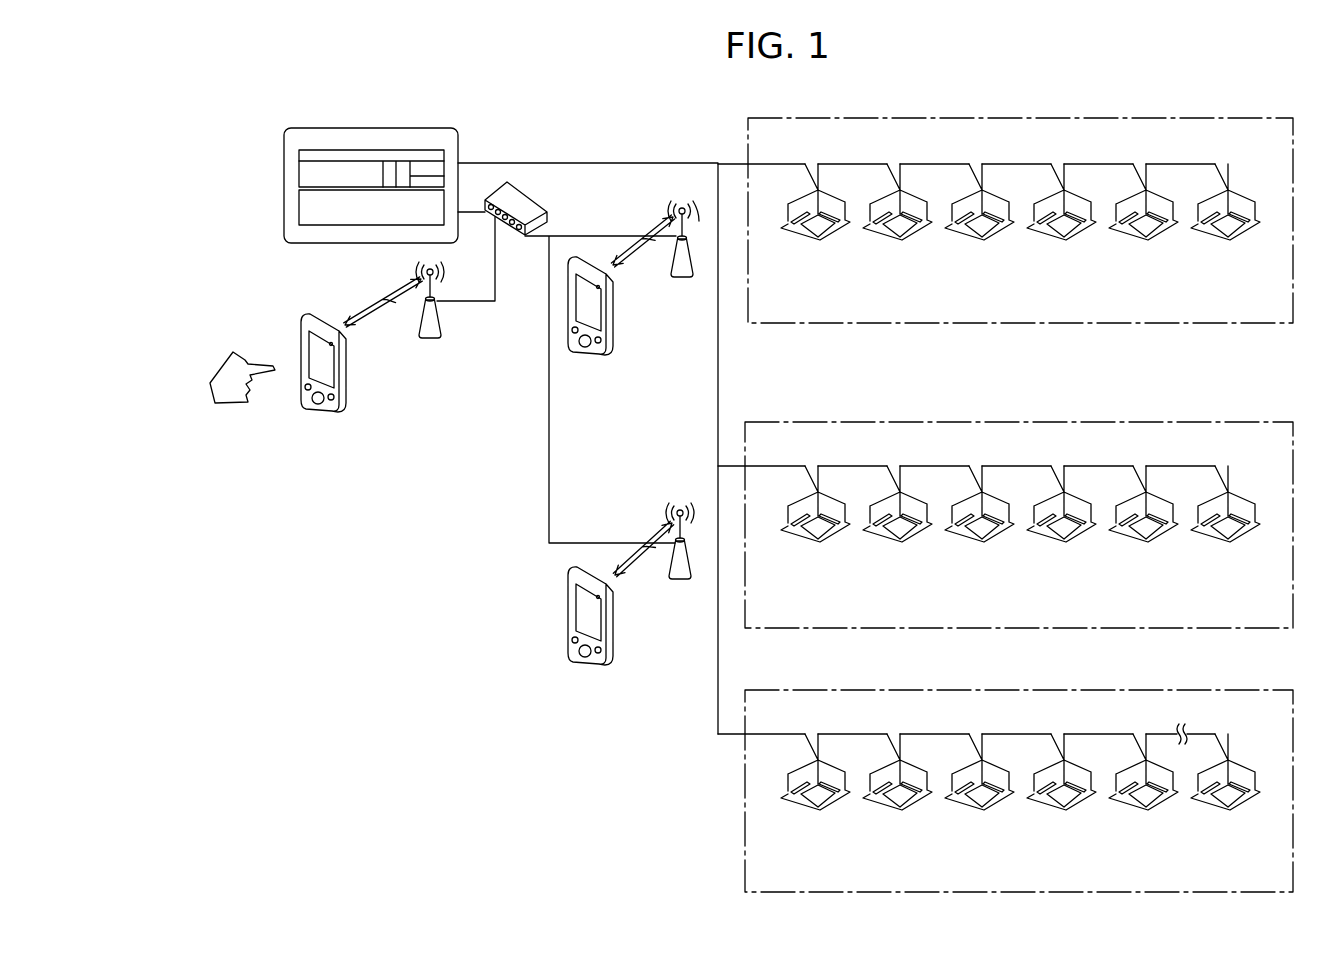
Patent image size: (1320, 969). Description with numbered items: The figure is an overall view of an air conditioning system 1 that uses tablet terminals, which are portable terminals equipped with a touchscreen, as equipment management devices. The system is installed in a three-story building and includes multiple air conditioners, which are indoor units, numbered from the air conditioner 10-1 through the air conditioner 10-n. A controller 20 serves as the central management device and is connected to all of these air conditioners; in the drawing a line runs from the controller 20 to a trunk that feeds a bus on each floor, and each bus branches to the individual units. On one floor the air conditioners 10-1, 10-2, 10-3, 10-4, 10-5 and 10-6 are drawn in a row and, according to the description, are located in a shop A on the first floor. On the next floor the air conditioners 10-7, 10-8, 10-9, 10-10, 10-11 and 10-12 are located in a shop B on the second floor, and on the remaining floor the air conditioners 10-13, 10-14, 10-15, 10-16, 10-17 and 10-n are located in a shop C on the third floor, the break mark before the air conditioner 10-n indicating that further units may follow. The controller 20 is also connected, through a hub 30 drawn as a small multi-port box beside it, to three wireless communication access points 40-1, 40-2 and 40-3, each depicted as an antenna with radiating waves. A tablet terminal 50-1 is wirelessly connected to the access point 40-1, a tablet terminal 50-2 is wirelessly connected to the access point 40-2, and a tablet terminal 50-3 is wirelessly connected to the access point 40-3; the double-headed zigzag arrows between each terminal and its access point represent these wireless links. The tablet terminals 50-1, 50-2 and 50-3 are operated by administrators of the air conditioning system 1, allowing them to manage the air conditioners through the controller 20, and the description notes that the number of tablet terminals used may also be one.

The air conditioning system 1 is at (590, 124).
The air conditioner 10-1 is at (810, 229).
The air conditioner 10-2 is at (892, 229).
The air conditioner 10-3 is at (974, 229).
The air conditioner 10-4 is at (1056, 229).
The air conditioner 10-5 is at (1138, 229).
The air conditioner 10-6 is at (1220, 229).
The air conditioner 10-7 is at (810, 531).
The air conditioner 10-8 is at (892, 531).
The air conditioner 10-9 is at (974, 531).
The air conditioner 10-10 is at (1052, 531).
The air conditioner 10-11 is at (1134, 531).
The air conditioner 10-12 is at (1216, 531).
The air conditioner 10-13 is at (806, 799).
The air conditioner 10-14 is at (888, 799).
The air conditioner 10-15 is at (970, 799).
The air conditioner 10-16 is at (1052, 799).
The air conditioner 10-17 is at (1134, 799).
The air conditioner 10-n is at (1220, 799).
The controller 20 is at (316, 127).
The hub 30 is at (518, 194).
The access point 40-1 is at (406, 325).
The access point 40-2 is at (678, 269).
The access point 40-3 is at (678, 571).
The tablet terminal 50-1 is at (313, 412).
The tablet terminal 50-2 is at (596, 331).
The tablet terminal 50-3 is at (596, 640).